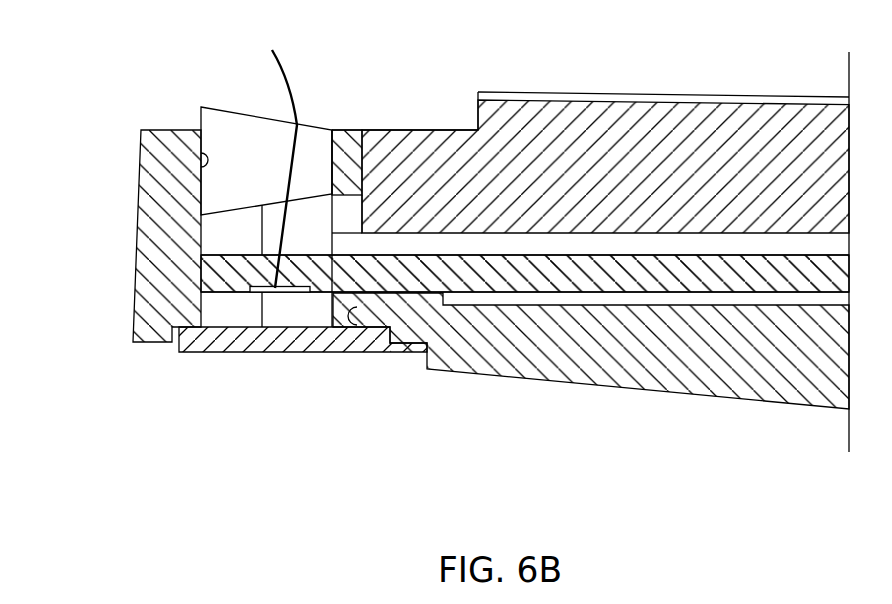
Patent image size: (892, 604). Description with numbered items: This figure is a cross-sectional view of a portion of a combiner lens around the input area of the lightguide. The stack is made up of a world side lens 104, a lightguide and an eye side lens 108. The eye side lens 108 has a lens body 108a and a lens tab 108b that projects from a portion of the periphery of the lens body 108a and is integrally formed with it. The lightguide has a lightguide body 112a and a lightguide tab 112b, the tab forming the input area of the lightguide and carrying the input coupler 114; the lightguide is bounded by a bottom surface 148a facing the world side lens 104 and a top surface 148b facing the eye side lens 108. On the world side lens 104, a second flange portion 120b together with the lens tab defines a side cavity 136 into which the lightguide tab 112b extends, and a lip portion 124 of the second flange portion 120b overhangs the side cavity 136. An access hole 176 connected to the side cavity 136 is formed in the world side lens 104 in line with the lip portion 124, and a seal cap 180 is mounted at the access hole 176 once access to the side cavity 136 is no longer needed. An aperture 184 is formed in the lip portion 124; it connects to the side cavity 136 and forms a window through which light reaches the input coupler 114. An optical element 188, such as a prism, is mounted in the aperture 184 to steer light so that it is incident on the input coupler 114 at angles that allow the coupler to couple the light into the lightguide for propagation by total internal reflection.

The world side lens 104 is at (673, 387).
The eye side lens 108 is at (643, 95).
The lens body 108a is at (577, 118).
The lens tab 108b is at (410, 130).
The lightguide body 112a is at (742, 265).
The lightguide tab 112b is at (236, 284).
The input coupler 114 is at (287, 288).
The second flange portion 120b is at (133, 296).
The lip portion 124 is at (347, 130).
The side cavity 136 is at (213, 239).
The bottom surface of lightguide 148a is at (773, 293).
The top surface of lightguide 148b is at (778, 253).
The access hole 176 is at (352, 326).
The seal cap 180 is at (282, 345).
The aperture 184 is at (201, 153).
The optical element 188 is at (232, 127).